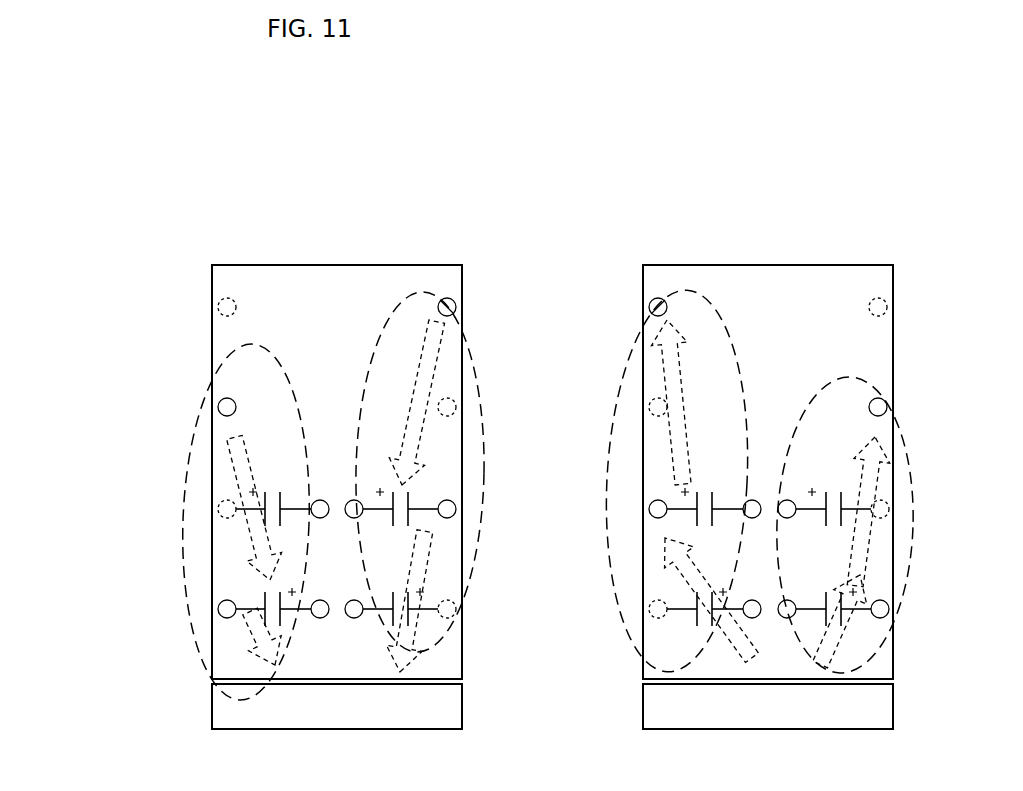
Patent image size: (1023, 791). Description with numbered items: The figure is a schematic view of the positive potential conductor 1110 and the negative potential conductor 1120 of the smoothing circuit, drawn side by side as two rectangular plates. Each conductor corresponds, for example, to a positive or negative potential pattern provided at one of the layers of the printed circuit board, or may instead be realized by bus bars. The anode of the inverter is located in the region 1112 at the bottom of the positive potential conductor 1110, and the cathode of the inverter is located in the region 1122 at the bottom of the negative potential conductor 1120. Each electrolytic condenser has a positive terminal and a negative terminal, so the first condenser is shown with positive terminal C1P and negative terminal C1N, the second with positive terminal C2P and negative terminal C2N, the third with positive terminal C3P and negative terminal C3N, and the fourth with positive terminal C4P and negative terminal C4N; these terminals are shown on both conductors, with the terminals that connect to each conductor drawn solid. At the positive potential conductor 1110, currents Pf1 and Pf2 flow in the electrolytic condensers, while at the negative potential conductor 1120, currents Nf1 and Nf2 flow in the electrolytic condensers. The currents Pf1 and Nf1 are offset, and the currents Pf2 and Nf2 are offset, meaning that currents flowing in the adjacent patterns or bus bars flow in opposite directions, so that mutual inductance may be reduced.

The negative potential conductor 1120 is at (337, 265).
The region 1122 is at (335, 730).
The positive potential conductor 1110 is at (763, 265).
The region 1112 is at (763, 730).
The current Nf1 is at (283, 362).
The current Nf2 is at (478, 376).
The current Pf1 is at (735, 335).
The current Pf2 is at (875, 385).
The positive terminal C1P is at (226, 518).
The negative terminal C1N is at (320, 518).
The positive terminal C2P is at (352, 505).
The negative terminal C2N is at (452, 506).
The positive terminal C3P is at (320, 618).
The negative terminal C3N is at (226, 618).
The positive terminal C4P is at (452, 605).
The negative terminal C4N is at (353, 600).